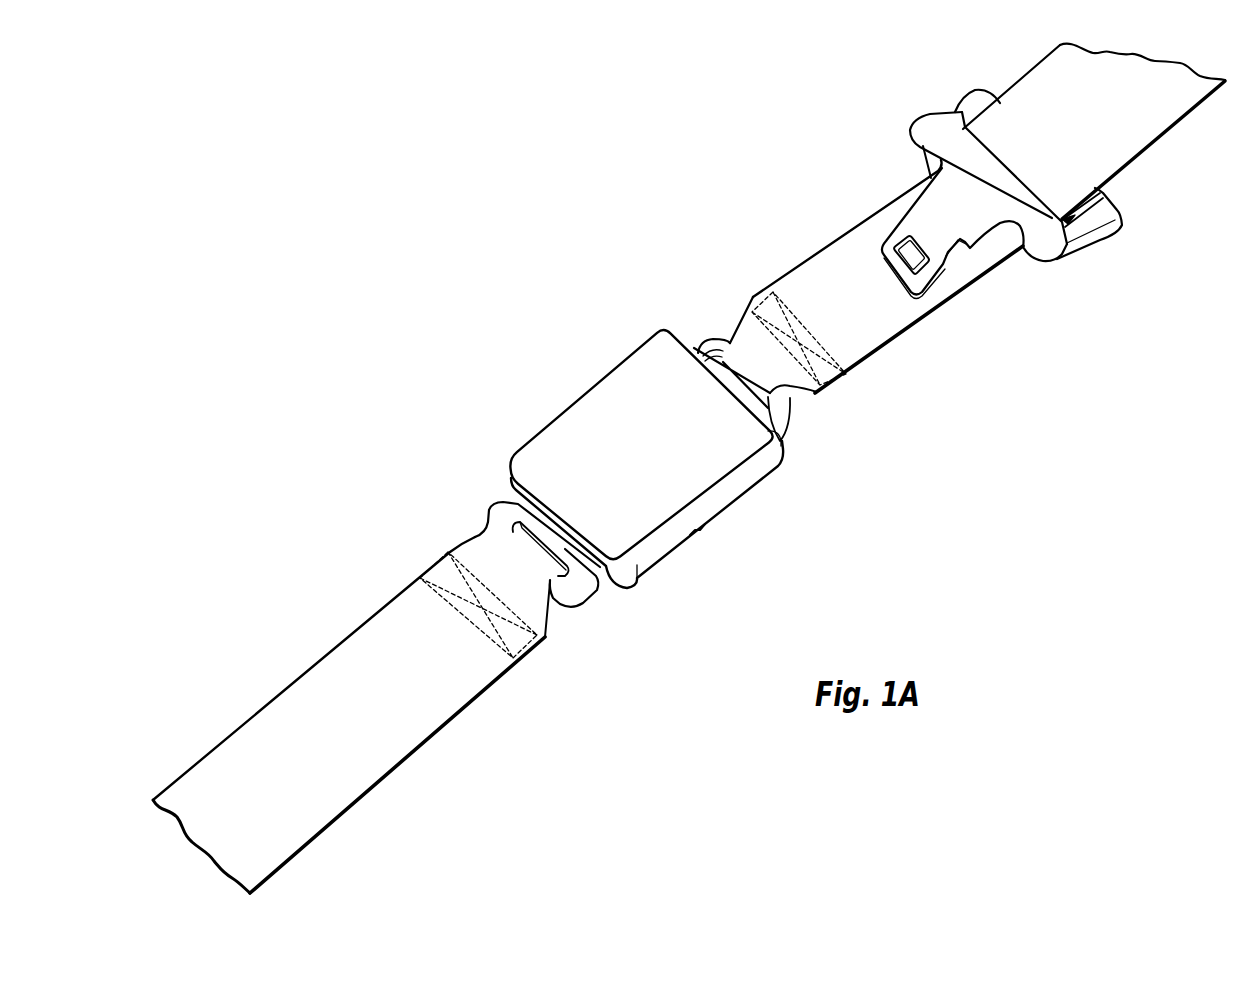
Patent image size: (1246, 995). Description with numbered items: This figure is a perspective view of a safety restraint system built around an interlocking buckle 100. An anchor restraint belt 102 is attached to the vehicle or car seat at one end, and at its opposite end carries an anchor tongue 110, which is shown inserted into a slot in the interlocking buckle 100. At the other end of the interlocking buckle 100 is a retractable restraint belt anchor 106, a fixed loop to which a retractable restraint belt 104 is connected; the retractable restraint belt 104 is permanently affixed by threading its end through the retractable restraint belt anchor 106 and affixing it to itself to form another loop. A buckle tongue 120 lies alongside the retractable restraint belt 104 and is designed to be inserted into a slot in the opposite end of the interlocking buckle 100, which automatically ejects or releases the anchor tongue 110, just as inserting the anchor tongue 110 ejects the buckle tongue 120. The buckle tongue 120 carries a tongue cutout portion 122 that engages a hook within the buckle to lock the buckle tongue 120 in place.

The interlocking buckle 100 is at (597, 408).
The anchor restraint belt 102 is at (420, 717).
The retractable restraint belt 104 is at (882, 320).
The retractable restraint belt anchor 106 is at (712, 340).
The anchor tongue 110 is at (597, 604).
The buckle tongue 120 is at (900, 219).
The tongue cutout portion 122 is at (962, 246).